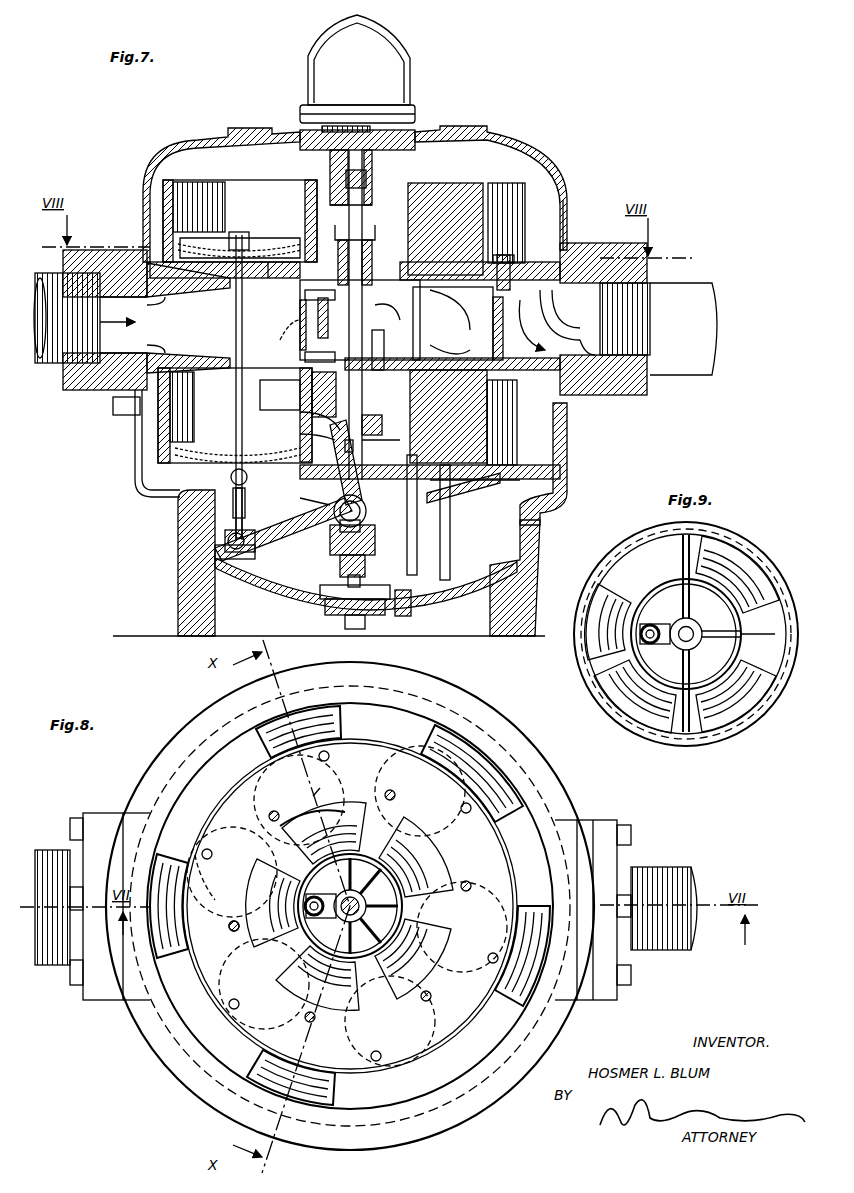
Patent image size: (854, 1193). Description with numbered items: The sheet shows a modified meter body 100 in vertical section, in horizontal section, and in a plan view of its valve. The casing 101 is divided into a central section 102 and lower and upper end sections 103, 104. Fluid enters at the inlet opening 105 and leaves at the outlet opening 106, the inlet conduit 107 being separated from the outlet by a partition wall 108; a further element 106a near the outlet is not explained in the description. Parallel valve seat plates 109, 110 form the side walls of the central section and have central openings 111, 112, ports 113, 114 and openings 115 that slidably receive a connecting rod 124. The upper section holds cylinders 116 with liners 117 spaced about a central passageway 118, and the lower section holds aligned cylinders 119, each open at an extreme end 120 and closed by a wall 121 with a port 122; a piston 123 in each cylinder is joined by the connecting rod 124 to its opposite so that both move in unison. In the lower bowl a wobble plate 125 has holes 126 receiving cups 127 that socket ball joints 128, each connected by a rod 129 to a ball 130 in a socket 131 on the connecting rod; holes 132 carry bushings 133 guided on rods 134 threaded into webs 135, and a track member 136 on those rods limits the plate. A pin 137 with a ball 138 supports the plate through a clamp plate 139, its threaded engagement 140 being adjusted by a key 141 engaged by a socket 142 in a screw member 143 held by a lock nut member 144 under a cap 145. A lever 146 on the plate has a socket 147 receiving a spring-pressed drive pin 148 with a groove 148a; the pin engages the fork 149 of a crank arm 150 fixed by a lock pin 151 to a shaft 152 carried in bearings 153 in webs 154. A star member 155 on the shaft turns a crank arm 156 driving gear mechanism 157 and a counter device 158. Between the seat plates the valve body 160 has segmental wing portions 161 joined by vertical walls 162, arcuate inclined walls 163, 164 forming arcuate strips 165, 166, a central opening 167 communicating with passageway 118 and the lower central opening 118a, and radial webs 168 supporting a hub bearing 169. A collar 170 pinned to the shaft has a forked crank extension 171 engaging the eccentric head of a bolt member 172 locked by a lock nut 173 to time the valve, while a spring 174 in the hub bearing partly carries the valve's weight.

In FIG. 7, the meter body 100 is at (572, 172).
In FIG. 7, the casing 101 is at (568, 224).
In FIG. 7, the central section 102 is at (360, 320).
In FIG. 7, the lower end section 103 is at (475, 495).
In FIG. 7, the upper end section 104 is at (357, 167).
In FIG. 7, the inlet opening 105 is at (104, 308).
In FIG. 7, the outlet opening 106 is at (595, 323).
In FIG. 7, the outlet channel 106a is at (515, 216).
In FIG. 7, the conduit 107 is at (291, 318).
In FIG. 7, the partition wall 108 is at (540, 317).
In FIG. 7, the valve seat plate 109 is at (505, 255).
In FIG. 7, the valve seat plate 110 is at (556, 342).
In FIG. 7, the central opening 111 is at (395, 262).
In FIG. 7, the central opening 112 is at (398, 372).
In FIG. 7, the ports 113 is at (272, 262).
In FIG. 8, the ports 113 is at (300, 818).
In FIG. 7, the ports 114 is at (285, 330).
In FIG. 7, the openings 115 is at (187, 325).
In FIG. 8, the openings 115 is at (318, 794).
In FIG. 7, the cylinders 116 is at (254, 190).
In FIG. 7, the liners 117 is at (305, 201).
In FIG. 7, the central passageway 118 is at (372, 315).
In FIG. 7, the central opening 118a is at (384, 437).
In FIG. 7, the cylinders 119 is at (160, 420).
In FIG. 8, the cylinders 119 is at (212, 877).
In FIG. 7, the extreme end 120 is at (160, 495).
In FIG. 7, the wall 121 is at (205, 376).
In FIG. 7, the port 122 is at (262, 255).
In FIG. 7, the piston 123 is at (200, 248).
In FIG. 7, the connecting rod 124 is at (228, 408).
In FIG. 8, the connecting rod 124 is at (228, 918).
In FIG. 7, the wobble plate 125 is at (492, 481).
In FIG. 7, the holes 126 is at (220, 552).
In FIG. 7, the cups 127 is at (225, 540).
In FIG. 7, the ball joints 128 is at (230, 536).
In FIG. 7, the rod 129 is at (256, 513).
In FIG. 7, the ball 130 is at (233, 496).
In FIG. 7, the socket 131 is at (231, 477).
In FIG. 7, the holes 132 is at (430, 496).
In FIG. 7, the bushings 133 is at (418, 505).
In FIG. 7, the rods 134 is at (420, 546).
In FIG. 7, the webs 135 is at (460, 440).
In FIG. 7, the track member 136 is at (510, 568).
In FIG. 7, the pin 137 is at (359, 530).
In FIG. 7, the ball 138 is at (355, 505).
In FIG. 7, the clamp plate 139 is at (337, 540).
In FIG. 7, the threaded engagement 140 is at (369, 565).
In FIG. 7, the key 141 is at (348, 580).
In FIG. 7, the socket 142 is at (332, 593).
In FIG. 7, the screw member 143 is at (335, 614).
In FIG. 7, the lock nut member 144 is at (402, 616).
In FIG. 7, the cap 145 is at (352, 629).
In FIG. 7, the lever 146 is at (357, 462).
In FIG. 7, the socket 147 is at (330, 495).
In FIG. 7, the drive pin 148 is at (300, 434).
In FIG. 7, the groove 148a is at (306, 496).
In FIG. 7, the fork 149 is at (300, 412).
In FIG. 7, the crank arm 150 is at (381, 423).
In FIG. 7, the lock pin 151 is at (360, 443).
In FIG. 7, the shaft 152 is at (387, 350).
In FIG. 7, the bearings 153 is at (323, 394).
In FIG. 7, the webs 154 is at (280, 395).
In FIG. 7, the star member 155 is at (366, 226).
In FIG. 7, the crank arm 156 is at (346, 178).
In FIG. 7, the gear mechanism 157 is at (330, 126).
In FIG. 7, the counter device 158 is at (357, 69).
In FIG. 7, the valve body 160 is at (445, 297).
In FIG. 8, the valve body 160 is at (340, 985).
In FIG. 9, the valve body 160 is at (600, 710).
In FIG. 8, the segmental wing portions 161 is at (440, 885).
In FIG. 9, the segmental wing portions 161 is at (592, 642).
In FIG. 7, the vertical walls 162 is at (440, 340).
In FIG. 9, the vertical walls 162 is at (598, 606).
In FIG. 8, the arcuate inclined wall 163 is at (305, 978).
In FIG. 9, the arcuate inclined wall 163 is at (730, 712).
In FIG. 8, the arcuate inclined wall 164 is at (345, 826).
In FIG. 9, the arcuate inclined wall 164 is at (730, 568).
In FIG. 9, the arcuate strip 165 is at (655, 535).
In FIG. 9, the arcuate strip 166 is at (660, 580).
In FIG. 9, the central opening 167 is at (711, 633).
In FIG. 9, the radial webs 168 is at (745, 642).
In FIG. 9, the hub bearing 169 is at (675, 640).
In FIG. 7, the collar 170 is at (390, 317).
In FIG. 7, the forked crank extension 171 is at (300, 318).
In FIG. 7, the bolt member 172 is at (305, 294).
In FIG. 8, the bolt member 172 is at (338, 896).
In FIG. 9, the bolt member 172 is at (653, 621).
In FIG. 7, the lock nut 173 is at (321, 308).
In FIG. 8, the lock nut 173 is at (305, 906).
In FIG. 9, the lock nut 173 is at (640, 642).
In FIG. 7, the spring 174 is at (458, 323).